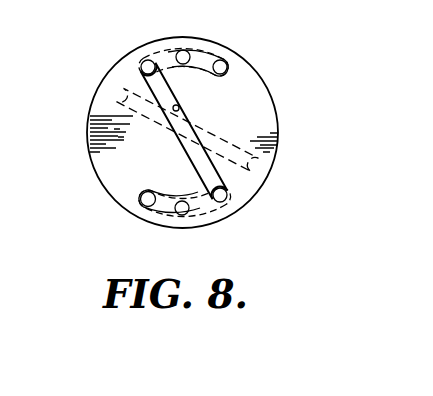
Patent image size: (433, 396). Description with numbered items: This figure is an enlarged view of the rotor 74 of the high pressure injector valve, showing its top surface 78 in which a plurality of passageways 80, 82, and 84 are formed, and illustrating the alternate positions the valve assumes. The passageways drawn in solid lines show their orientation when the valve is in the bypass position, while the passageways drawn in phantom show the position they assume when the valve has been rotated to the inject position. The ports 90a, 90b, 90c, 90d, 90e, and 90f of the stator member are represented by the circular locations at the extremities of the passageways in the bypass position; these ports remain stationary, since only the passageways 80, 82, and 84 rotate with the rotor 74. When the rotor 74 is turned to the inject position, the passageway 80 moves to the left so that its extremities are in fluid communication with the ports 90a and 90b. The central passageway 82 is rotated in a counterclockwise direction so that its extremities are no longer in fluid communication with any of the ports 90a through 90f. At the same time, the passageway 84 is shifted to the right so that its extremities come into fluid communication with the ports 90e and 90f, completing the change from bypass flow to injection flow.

The rotor 74 is at (88, 148).
The top surface 78 is at (88, 118).
The passageway 80 is at (203, 56).
The central passageway 82 is at (179, 108).
The passageway 84 is at (160, 208).
The port 90a is at (142, 62).
The port 90b is at (183, 50).
The port 90c is at (228, 62).
The port 90d is at (129, 202).
The port 90e is at (208, 213).
The port 90f is at (228, 197).